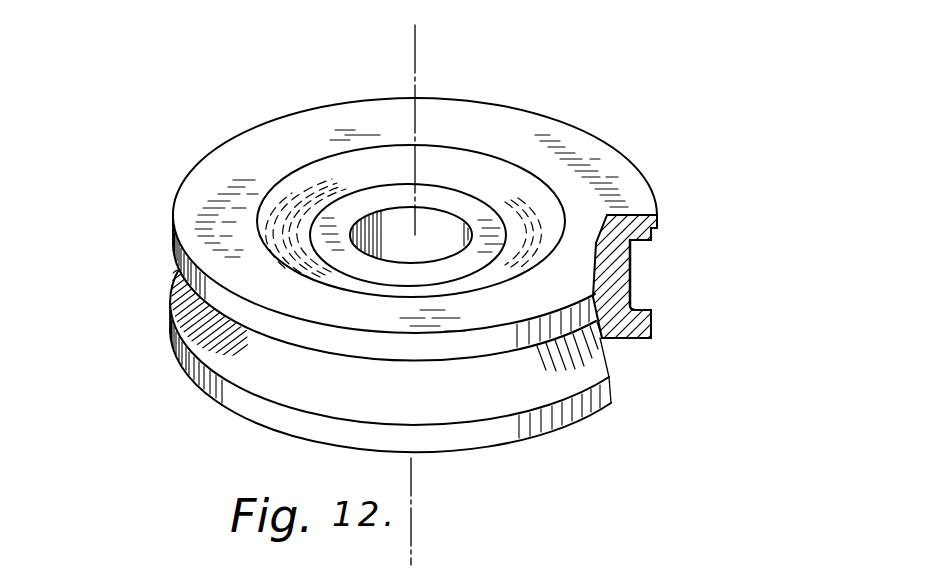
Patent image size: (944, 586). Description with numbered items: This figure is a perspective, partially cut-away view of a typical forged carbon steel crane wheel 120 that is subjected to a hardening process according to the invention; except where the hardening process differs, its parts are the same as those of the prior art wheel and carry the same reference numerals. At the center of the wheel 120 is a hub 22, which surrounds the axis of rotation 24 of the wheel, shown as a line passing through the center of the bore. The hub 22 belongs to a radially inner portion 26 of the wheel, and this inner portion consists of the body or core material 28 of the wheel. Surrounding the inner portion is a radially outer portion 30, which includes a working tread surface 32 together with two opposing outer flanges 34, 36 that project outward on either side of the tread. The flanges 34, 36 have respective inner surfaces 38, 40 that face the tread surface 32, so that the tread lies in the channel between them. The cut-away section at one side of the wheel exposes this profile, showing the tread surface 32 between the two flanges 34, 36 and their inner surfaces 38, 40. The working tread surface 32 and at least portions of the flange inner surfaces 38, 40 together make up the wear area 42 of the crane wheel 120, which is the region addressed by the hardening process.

The forged carbon steel crane wheel 120 is at (633, 115).
The hub 22 is at (394, 206).
The axis of rotation 24 is at (415, 50).
The radially inner portion 26 is at (310, 172).
The body or core material 28 is at (492, 181).
The radially outer portion 30 is at (157, 316).
The working tread surface 32 is at (632, 264).
The outer flange 34 is at (657, 219).
The outer flange 36 is at (653, 333).
The flange inner surface 38 is at (651, 242).
The flange inner surface 40 is at (648, 312).
The wear area 42 is at (677, 289).